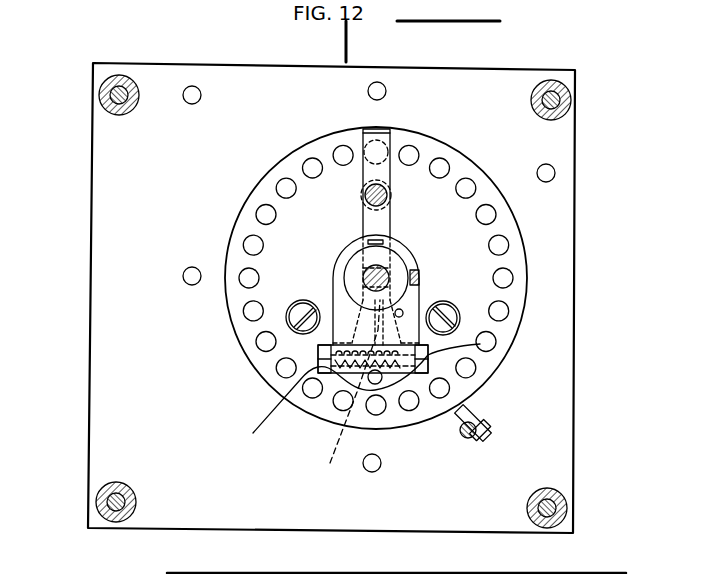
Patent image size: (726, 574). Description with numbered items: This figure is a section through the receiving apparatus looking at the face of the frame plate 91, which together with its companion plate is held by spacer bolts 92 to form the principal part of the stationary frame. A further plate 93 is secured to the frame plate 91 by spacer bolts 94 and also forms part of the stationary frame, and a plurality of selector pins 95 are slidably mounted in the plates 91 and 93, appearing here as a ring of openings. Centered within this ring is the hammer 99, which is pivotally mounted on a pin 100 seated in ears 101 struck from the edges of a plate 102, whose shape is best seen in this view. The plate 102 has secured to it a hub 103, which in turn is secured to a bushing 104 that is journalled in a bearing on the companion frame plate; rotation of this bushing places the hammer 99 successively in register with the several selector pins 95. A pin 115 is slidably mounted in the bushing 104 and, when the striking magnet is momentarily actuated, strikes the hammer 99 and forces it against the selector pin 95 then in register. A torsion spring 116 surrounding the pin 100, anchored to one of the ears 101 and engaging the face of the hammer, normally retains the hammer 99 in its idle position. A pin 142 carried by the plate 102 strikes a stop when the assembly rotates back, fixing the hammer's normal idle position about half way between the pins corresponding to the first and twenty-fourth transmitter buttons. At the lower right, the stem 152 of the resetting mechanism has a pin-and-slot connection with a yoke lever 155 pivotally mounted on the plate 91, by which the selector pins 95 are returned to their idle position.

The frame plate 91 is at (577, 252).
The spacer bolts 92 is at (105, 104).
The plate 93 is at (493, 177).
The spacer bolts 94 is at (392, 197).
The selector pins 95 is at (453, 150).
The hammer 99 is at (391, 223).
The pin 100 is at (440, 355).
The ears 101 is at (358, 404).
The plate 102 is at (421, 263).
The hub 103 is at (397, 260).
The bushing 104 is at (362, 282).
The pin 115 is at (368, 272).
The torsion spring 116 is at (347, 397).
The pin 142 is at (378, 384).
The stem 152 is at (468, 440).
The yoke lever 155 is at (476, 408).